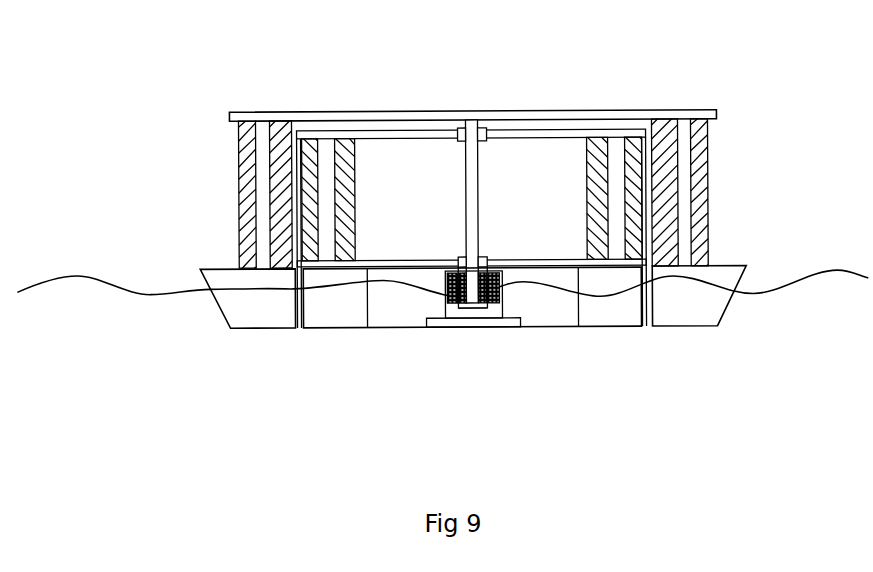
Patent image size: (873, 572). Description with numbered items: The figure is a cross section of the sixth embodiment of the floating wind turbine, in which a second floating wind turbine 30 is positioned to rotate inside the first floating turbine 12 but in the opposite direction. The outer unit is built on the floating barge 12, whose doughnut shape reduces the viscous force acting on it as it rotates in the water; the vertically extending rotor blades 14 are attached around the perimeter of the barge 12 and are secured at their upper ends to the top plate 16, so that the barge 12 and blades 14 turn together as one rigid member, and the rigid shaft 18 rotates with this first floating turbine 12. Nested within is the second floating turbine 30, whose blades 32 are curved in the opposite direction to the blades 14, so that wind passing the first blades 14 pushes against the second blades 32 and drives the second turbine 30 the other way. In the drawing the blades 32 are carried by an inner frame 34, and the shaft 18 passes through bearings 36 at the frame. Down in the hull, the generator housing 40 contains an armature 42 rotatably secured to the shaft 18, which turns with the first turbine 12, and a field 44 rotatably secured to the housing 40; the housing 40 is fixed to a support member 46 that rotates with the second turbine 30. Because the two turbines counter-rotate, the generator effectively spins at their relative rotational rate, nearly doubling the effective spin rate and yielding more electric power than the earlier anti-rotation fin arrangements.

The floating barge 12 is at (677, 307).
The rotor blades 14 is at (670, 200).
The top plate 16 is at (612, 112).
The rigid shaft 18 is at (475, 172).
The second floating wind turbine 30 is at (611, 315).
The blades 32 is at (350, 147).
The inner frame 34 is at (418, 133).
The shaft bearing 36 is at (458, 128).
The generator housing 40 is at (452, 312).
The armature 42 is at (485, 303).
The field 44 is at (496, 292).
The support member 46 is at (455, 323).